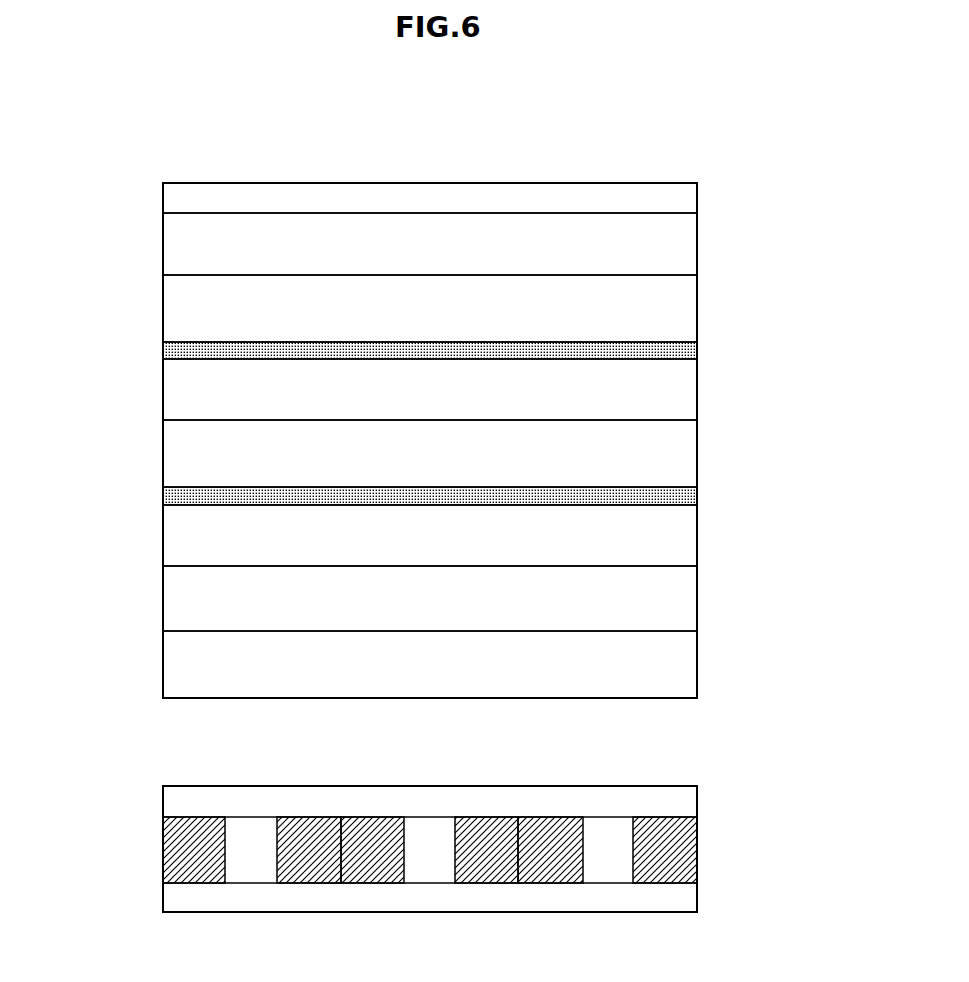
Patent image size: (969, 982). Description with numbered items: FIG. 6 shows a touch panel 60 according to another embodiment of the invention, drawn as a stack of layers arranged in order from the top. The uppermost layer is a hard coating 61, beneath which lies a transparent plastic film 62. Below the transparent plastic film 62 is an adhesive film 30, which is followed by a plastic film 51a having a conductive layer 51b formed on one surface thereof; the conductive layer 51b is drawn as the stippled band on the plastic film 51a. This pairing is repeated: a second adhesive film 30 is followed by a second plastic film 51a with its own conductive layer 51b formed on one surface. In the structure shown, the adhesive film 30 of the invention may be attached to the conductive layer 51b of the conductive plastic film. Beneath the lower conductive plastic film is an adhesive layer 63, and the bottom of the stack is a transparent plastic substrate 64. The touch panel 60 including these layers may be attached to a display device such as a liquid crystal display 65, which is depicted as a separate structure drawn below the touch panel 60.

The touch panel 60 is at (447, 150).
The hard coating 61 is at (697, 183).
The transparent plastic film 62 is at (697, 243).
The adhesive film 30 is at (697, 310).
The plastic film 51a is at (697, 388).
The conductive layer 51b is at (162, 348).
The adhesive layer 63 is at (697, 603).
The transparent plastic substrate 64 is at (697, 668).
The liquid crystal display 65 is at (737, 823).